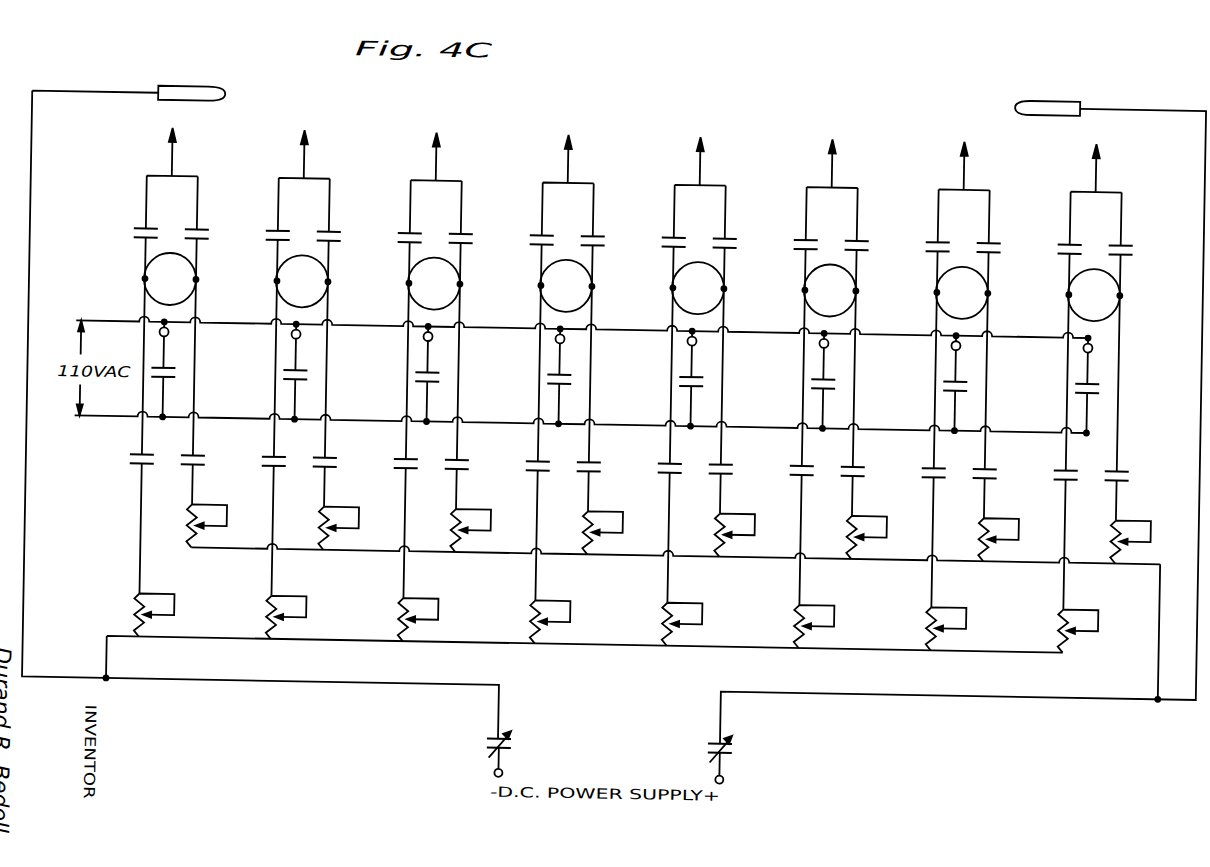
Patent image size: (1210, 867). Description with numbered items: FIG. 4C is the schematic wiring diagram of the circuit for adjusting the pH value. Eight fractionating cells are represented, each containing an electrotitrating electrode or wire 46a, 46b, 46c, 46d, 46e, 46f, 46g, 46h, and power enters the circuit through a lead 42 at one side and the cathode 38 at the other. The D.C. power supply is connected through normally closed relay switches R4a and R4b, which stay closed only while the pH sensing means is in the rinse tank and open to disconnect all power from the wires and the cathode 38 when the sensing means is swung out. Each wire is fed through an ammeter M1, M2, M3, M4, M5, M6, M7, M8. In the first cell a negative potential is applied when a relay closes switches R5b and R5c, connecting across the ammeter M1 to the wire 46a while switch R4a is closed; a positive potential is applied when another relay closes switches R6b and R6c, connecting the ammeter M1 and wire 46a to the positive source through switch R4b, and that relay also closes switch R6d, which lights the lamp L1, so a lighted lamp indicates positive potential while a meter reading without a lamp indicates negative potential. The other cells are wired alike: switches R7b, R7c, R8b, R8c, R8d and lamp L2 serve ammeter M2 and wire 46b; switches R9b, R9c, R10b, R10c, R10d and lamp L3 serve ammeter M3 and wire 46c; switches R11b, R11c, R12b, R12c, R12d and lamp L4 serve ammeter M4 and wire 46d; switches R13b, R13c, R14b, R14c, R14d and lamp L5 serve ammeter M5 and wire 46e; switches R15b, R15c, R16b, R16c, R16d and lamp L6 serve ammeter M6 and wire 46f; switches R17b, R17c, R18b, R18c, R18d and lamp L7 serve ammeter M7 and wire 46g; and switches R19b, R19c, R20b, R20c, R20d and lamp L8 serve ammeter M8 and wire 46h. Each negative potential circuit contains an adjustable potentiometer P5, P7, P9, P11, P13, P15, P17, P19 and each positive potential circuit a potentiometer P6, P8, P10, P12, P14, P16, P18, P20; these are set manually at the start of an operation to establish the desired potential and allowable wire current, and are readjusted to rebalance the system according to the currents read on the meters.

The connector plug 42 is at (212, 84).
The cathode 38 is at (1046, 86).
The electrotitrating electrode 46a is at (196, 151).
The electrotitrating electrode 46b is at (328, 153).
The electrotitrating electrode 46c is at (459, 156).
The electrotitrating electrode 46d is at (592, 158).
The electrotitrating electrode 46e is at (724, 160).
The electrotitrating electrode 46f is at (855, 162).
The electrotitrating electrode 46g is at (988, 165).
The electrotitrating electrode 46h is at (1120, 167).
The ammeter M1 is at (170, 279).
The ammeter M2 is at (302, 281).
The ammeter M3 is at (434, 283).
The ammeter M4 is at (566, 285).
The ammeter M5 is at (698, 288).
The ammeter M6 is at (830, 290).
The ammeter M7 is at (962, 292).
The ammeter M8 is at (1094, 295).
The lamp L1 is at (172, 343).
The lamp L2 is at (304, 346).
The lamp L3 is at (436, 348).
The lamp L4 is at (568, 350).
The lamp L5 is at (700, 353).
The lamp L6 is at (832, 355).
The lamp L7 is at (964, 357).
The lamp L8 is at (1096, 359).
The relay switch R5c is at (233, 228).
The relay switch R6c is at (107, 226).
The relay switch R7c is at (363, 240).
The relay switch R8c is at (247, 240).
The relay switch R9c is at (497, 228).
The relay switch R10c is at (371, 226).
The relay switch R11c is at (627, 240).
The relay switch R12c is at (511, 240).
The relay switch R13c is at (761, 228).
The relay switch R14c is at (635, 226).
The relay switch R15c is at (891, 240).
The relay switch R16c is at (775, 240).
The relay switch R17c is at (1025, 228).
The relay switch R18c is at (899, 226).
The relay switch R19c is at (1155, 240).
The relay switch R20c is at (1039, 240).
The relay switch R6d is at (179, 374).
The relay switch R8d is at (311, 374).
The relay switch R10d is at (443, 374).
The relay switch R12d is at (575, 374).
The relay switch R14d is at (707, 374).
The relay switch R16d is at (839, 374).
The relay switch R18d is at (971, 374).
The relay switch R20d is at (1103, 374).
The relay switch R5b is at (103, 455).
The relay switch R6b is at (235, 456).
The relay switch R7b is at (265, 465).
The relay switch R8b is at (365, 466).
The relay switch R9b is at (367, 455).
The relay switch R10b is at (499, 456).
The relay switch R11b is at (529, 465).
The relay switch R12b is at (629, 466).
The relay switch R13b is at (631, 455).
The relay switch R14b is at (763, 456).
The relay switch R15b is at (793, 465).
The relay switch R16b is at (893, 466).
The relay switch R17b is at (895, 455).
The relay switch R18b is at (1027, 456).
The relay switch R19b is at (1057, 465).
The relay switch R20b is at (1157, 466).
The potentiometer P5 is at (182, 602).
The potentiometer P6 is at (233, 512).
The potentiometer P7 is at (314, 602).
The potentiometer P8 is at (365, 512).
The potentiometer P9 is at (446, 602).
The potentiometer P10 is at (497, 512).
The potentiometer P11 is at (578, 602).
The potentiometer P12 is at (629, 512).
The potentiometer P13 is at (710, 602).
The potentiometer P14 is at (761, 512).
The potentiometer P15 is at (842, 602).
The potentiometer P16 is at (893, 512).
The potentiometer P17 is at (974, 602).
The potentiometer P18 is at (1025, 512).
The potentiometer P19 is at (1106, 602).
The potentiometer P20 is at (1157, 512).
The relay switch R4a is at (516, 740).
The relay switch R4b is at (722, 740).